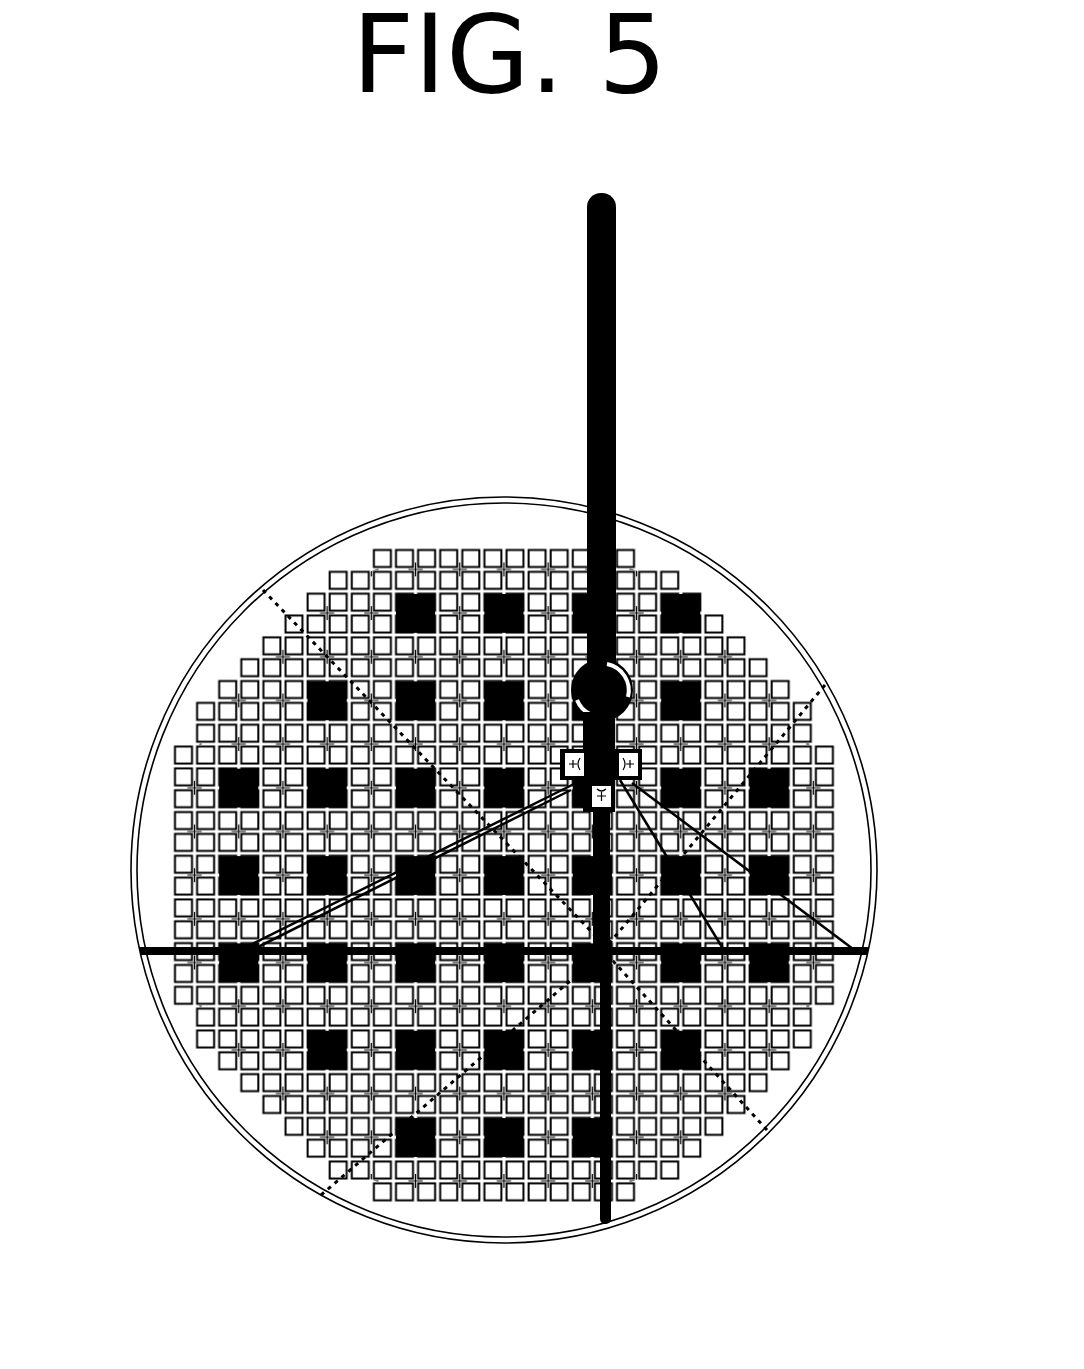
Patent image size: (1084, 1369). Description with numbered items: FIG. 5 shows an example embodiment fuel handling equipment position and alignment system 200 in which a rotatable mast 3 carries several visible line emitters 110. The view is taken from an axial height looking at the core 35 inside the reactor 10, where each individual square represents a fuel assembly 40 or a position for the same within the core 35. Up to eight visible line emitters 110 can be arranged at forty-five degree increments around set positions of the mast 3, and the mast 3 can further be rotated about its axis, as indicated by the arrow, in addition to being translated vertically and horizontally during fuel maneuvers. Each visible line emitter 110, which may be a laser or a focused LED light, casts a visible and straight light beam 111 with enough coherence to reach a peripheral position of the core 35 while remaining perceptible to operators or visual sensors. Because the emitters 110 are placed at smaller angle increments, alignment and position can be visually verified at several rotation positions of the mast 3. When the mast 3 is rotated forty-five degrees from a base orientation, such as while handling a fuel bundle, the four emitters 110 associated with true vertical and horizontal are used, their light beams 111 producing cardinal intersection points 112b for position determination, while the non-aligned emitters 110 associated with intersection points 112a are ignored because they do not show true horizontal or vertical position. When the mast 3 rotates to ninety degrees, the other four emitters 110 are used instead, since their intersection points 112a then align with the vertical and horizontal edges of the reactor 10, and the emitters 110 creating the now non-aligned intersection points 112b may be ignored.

The alignment system 200 is at (233, 357).
The reactor 10 is at (712, 548).
The core 35 is at (422, 548).
The fuel assemblies 40 is at (178, 863).
The mast 3 is at (587, 344).
The visible line emitter 110 is at (648, 752).
The light beam 111 is at (167, 950).
The intersection points 112a is at (263, 590).
The cardinal intersection points 112b is at (143, 951).